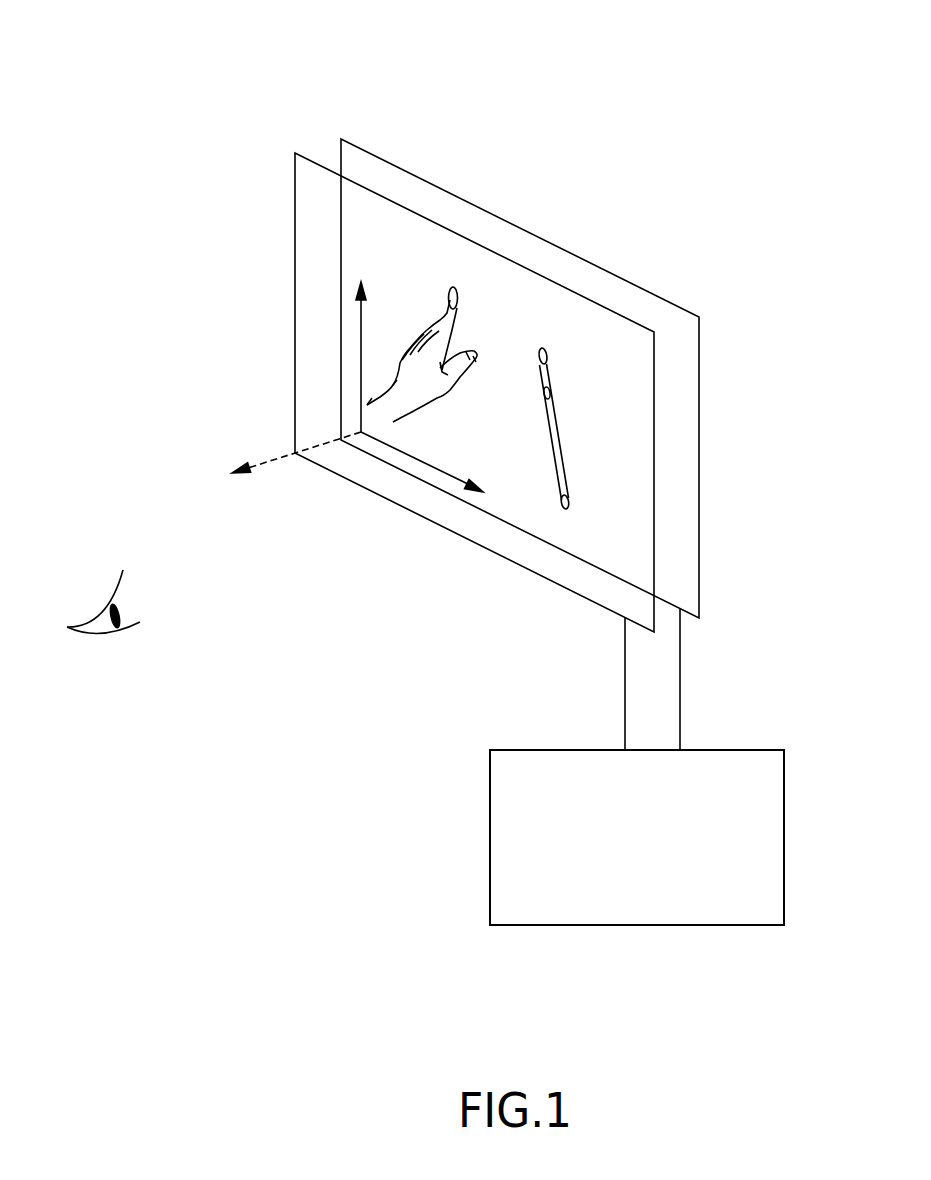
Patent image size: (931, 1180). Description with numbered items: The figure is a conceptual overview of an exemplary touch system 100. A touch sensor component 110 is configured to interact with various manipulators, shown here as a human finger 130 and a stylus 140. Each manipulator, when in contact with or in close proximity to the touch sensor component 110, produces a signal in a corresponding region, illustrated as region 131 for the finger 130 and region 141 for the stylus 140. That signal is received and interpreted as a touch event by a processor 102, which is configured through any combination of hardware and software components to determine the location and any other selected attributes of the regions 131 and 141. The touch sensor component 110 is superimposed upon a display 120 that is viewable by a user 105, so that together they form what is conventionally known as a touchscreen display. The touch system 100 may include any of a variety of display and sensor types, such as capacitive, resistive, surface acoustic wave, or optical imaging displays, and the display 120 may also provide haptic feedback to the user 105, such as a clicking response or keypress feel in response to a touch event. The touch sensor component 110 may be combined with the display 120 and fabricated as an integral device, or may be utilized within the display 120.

The touch system 100 is at (676, 83).
The processor 102 is at (618, 879).
The user 105 is at (80, 617).
The touch sensor component 110 is at (295, 294).
The display 120 is at (699, 354).
The human finger 130 is at (446, 315).
The region 131 is at (452, 286).
The stylus 140 is at (562, 442).
The region 141 is at (544, 347).